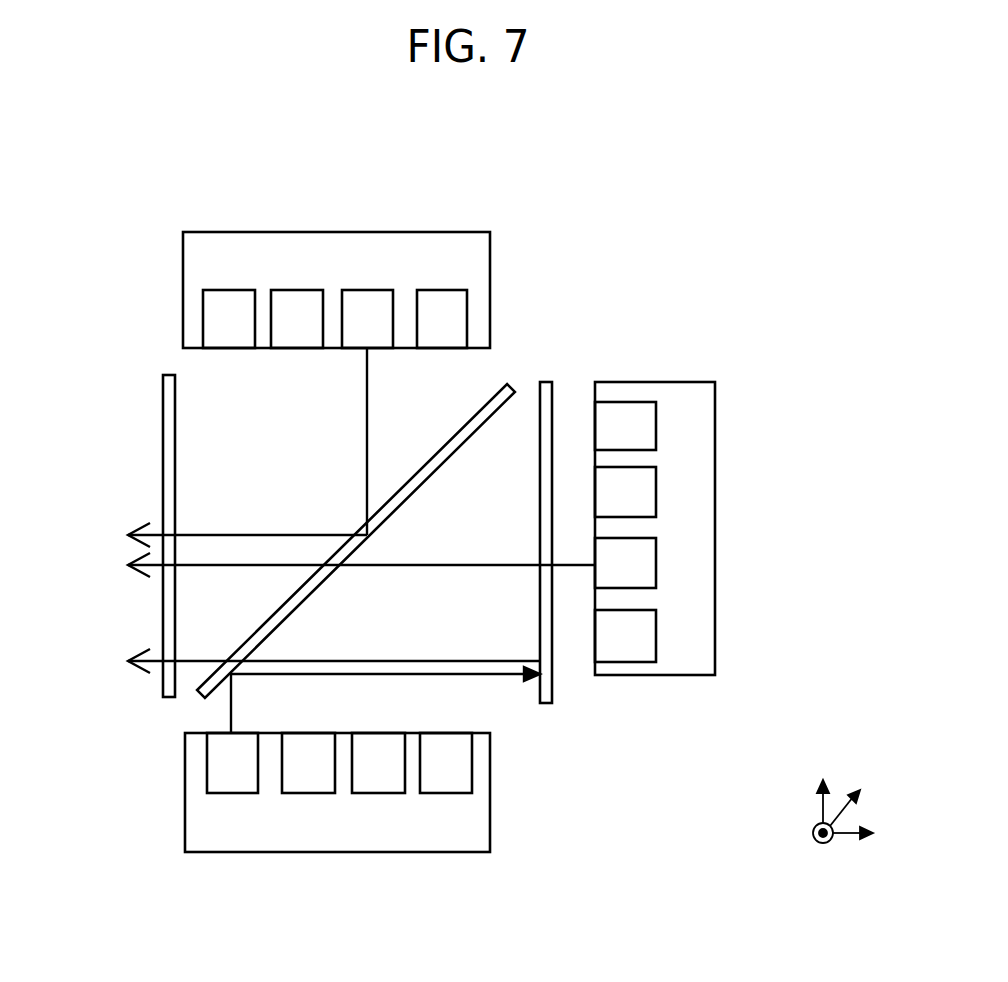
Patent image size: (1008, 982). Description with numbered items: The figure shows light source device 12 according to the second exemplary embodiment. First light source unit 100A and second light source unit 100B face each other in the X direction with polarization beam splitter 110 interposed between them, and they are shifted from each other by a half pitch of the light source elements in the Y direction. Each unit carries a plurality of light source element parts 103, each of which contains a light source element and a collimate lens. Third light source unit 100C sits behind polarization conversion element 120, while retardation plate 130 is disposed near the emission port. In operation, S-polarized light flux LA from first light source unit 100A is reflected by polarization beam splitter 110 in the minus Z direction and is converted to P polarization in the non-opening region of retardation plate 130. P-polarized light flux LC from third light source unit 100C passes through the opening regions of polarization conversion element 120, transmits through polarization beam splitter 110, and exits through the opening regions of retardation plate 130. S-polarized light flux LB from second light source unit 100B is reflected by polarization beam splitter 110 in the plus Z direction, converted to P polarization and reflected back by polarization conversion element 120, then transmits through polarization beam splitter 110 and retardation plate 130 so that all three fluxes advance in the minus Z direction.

The light source device 12 is at (74, 205).
The first light source unit 100A is at (333, 232).
The second light source unit 100B is at (278, 853).
The third light source unit 100C is at (717, 525).
The light source element part 103 is at (440, 290).
The polarization beam splitter 110 is at (487, 393).
The polarization conversion element 120 is at (553, 692).
The retardation plate 130 is at (167, 375).